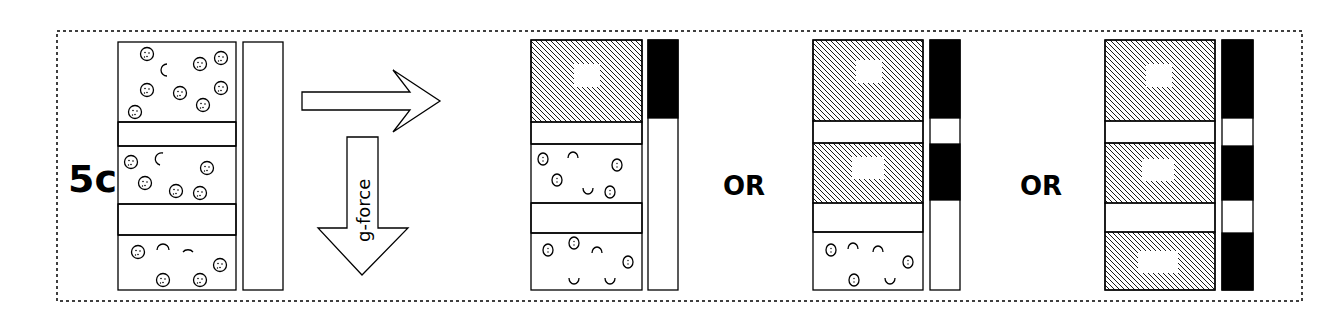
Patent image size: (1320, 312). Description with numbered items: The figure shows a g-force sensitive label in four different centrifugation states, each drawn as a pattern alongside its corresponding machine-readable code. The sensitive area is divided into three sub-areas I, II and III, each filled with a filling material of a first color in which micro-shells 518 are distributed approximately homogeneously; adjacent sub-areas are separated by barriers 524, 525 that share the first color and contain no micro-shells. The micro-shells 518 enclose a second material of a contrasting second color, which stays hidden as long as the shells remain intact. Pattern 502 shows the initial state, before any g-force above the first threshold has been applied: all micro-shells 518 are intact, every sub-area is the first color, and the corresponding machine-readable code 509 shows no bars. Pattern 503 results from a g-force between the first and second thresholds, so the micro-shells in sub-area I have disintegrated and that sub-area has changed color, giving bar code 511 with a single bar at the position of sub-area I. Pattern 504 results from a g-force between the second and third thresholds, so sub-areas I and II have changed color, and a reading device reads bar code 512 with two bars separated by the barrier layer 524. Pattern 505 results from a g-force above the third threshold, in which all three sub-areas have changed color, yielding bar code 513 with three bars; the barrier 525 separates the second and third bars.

The pattern 502 is at (196, 42).
The micro-shells 518 is at (146, 82).
The machine-readable code 509 is at (266, 42).
The barrier layer 524 is at (177, 135).
The barrier 525 is at (177, 218).
The pattern 503 is at (587, 40).
The bar code 511 is at (670, 40).
The pattern 504 is at (868, 40).
The bar code 512 is at (952, 38).
The pattern 505 is at (1158, 40).
The bar code 513 is at (1240, 40).